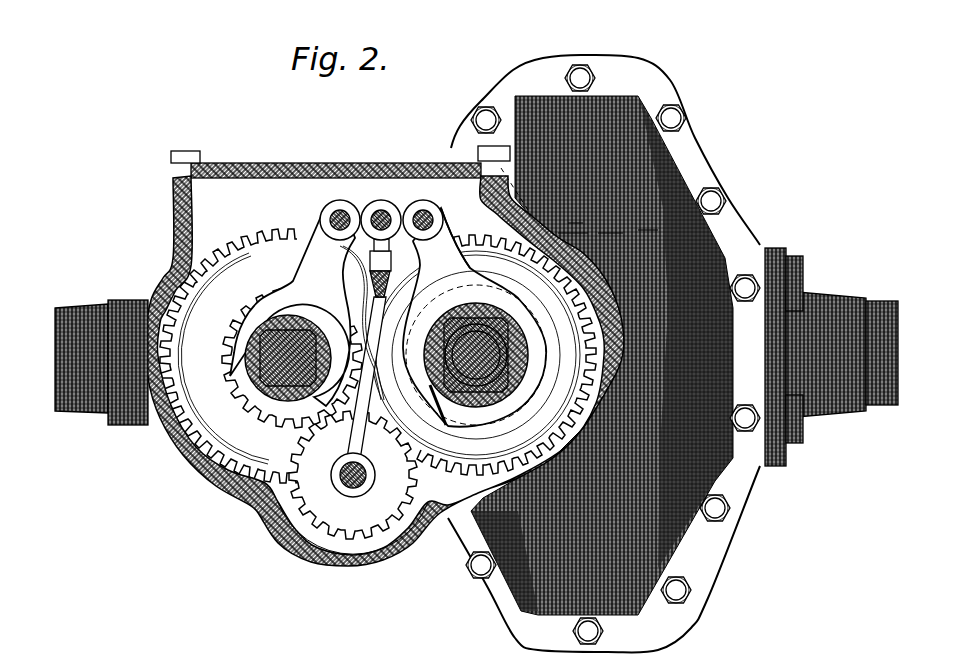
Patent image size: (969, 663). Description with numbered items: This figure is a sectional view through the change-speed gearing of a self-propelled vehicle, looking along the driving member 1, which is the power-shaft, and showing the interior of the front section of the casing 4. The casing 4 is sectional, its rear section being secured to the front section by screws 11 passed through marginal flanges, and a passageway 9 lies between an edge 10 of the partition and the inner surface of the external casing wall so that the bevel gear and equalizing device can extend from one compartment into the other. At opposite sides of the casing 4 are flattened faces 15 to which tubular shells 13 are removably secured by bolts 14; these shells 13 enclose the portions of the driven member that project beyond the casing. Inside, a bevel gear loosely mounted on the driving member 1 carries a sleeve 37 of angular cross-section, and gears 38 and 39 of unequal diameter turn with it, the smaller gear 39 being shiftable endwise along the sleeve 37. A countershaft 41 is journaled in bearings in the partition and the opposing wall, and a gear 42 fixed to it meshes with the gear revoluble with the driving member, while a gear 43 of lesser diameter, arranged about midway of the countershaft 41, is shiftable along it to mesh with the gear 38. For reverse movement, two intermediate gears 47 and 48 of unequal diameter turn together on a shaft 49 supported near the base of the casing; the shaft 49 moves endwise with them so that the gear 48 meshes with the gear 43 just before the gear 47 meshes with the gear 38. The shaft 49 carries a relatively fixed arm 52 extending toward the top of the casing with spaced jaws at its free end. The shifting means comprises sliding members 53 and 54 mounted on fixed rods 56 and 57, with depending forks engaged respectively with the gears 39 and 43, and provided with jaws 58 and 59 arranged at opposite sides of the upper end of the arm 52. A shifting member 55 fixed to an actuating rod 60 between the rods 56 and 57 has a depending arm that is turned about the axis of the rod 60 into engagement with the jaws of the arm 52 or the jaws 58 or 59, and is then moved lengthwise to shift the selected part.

The driving member 1 is at (443, 407).
The casing 4 is at (176, 212).
The passageway 9 is at (596, 316).
The edge 10 is at (563, 258).
The screws 11 is at (670, 578).
The tubular shells 13 is at (822, 290).
The bolts 14 is at (798, 262).
The flattened faces 15 is at (768, 240).
The sleeve 37 is at (503, 391).
The gear 38 is at (473, 462).
The gear 39 is at (522, 342).
The countershaft 41 is at (305, 318).
The gear 42 is at (166, 337).
The gear 43 is at (257, 398).
The intermediate gear 47 is at (357, 510).
The intermediate gear 48 is at (310, 532).
The shaft 49 is at (332, 478).
The arm 52 is at (362, 370).
The sliding member 53 is at (434, 237).
The sliding member 54 is at (303, 258).
The shifting member 55 is at (383, 215).
The fixed rod 56 is at (422, 205).
The fixed rod 57 is at (326, 208).
The jaws 58 is at (410, 257).
The jaws 59 is at (342, 262).
The actuating rod 60 is at (371, 207).